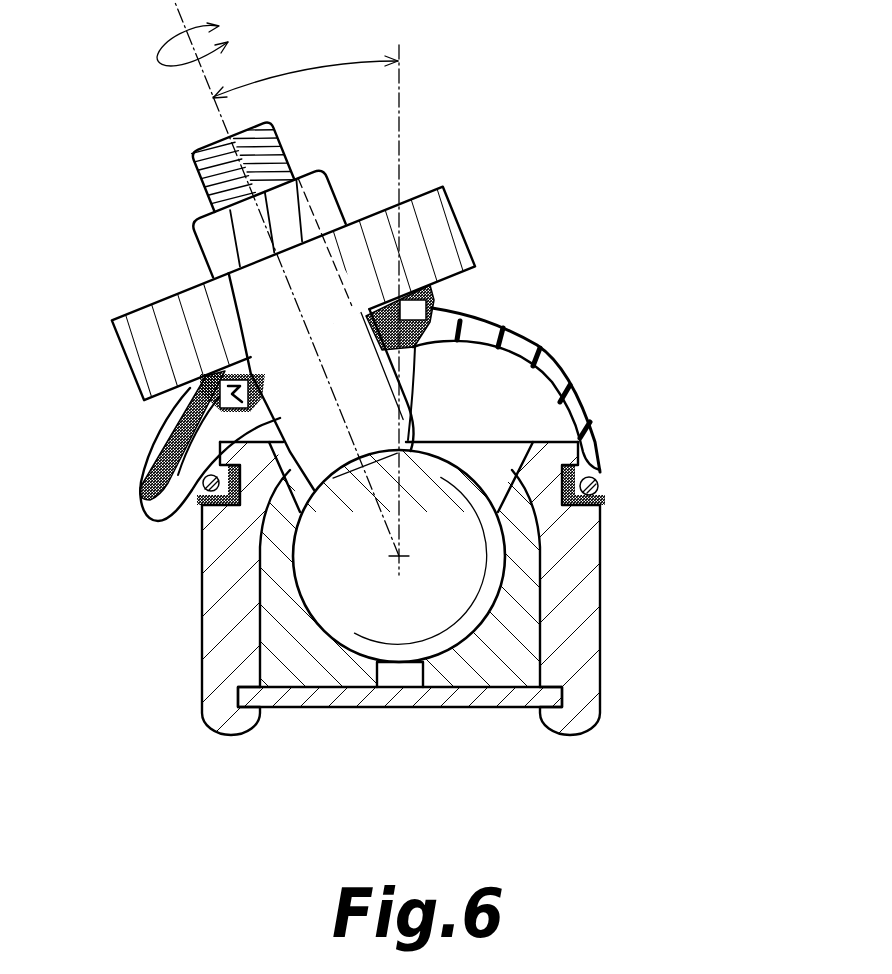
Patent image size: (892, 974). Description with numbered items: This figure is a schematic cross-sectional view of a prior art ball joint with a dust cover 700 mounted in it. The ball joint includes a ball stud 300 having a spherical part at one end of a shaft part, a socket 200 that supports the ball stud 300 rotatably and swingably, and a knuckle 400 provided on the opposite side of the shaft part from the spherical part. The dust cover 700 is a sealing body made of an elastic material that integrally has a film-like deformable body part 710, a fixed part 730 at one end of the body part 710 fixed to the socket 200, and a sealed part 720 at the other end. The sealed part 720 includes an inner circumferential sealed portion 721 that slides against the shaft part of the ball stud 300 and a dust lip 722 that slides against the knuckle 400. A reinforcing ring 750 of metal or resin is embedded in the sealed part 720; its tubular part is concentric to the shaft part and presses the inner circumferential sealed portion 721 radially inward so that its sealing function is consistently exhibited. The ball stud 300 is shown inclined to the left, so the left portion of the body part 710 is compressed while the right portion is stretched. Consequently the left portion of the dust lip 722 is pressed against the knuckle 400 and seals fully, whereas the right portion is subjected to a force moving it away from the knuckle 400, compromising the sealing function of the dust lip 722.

The socket 200 is at (629, 654).
The ball stud 300 is at (456, 409).
The knuckle 400 is at (441, 214).
The dust cover 700 is at (406, 338).
The body part 710 is at (561, 362).
The sealed part 720 is at (341, 296).
The inner circumferential sealed portion 721 is at (267, 372).
The dust lip 722 is at (452, 297).
The fixed part 730 is at (605, 499).
The reinforcing ring 750 is at (413, 348).